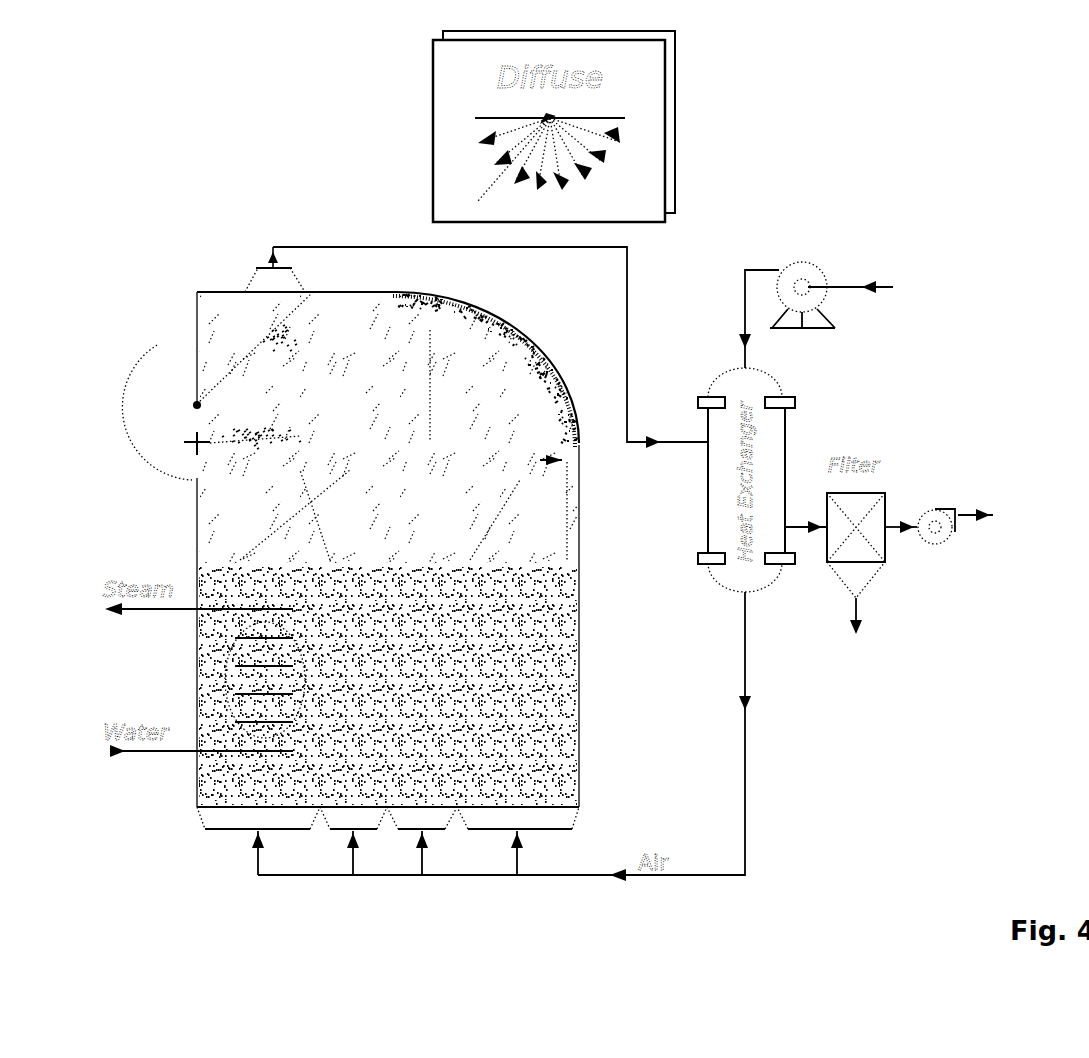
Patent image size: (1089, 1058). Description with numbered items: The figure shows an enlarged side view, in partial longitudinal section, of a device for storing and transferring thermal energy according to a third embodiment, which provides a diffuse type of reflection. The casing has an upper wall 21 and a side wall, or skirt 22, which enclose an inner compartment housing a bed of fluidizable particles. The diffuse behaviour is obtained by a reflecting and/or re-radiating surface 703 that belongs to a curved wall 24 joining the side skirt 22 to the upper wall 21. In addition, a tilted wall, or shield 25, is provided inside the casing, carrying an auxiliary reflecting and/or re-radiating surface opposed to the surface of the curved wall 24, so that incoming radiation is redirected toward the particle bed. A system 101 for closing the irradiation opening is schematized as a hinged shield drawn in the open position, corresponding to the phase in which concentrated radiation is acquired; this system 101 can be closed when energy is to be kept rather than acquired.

The upper wall 21 is at (225, 290).
The side wall 22 is at (580, 645).
The curved wall 24 is at (560, 395).
The tilted wall 25 is at (222, 380).
The system for closing the irradiation opening 101 is at (167, 347).
The reflecting and/or re-radiating surface 703 is at (500, 340).